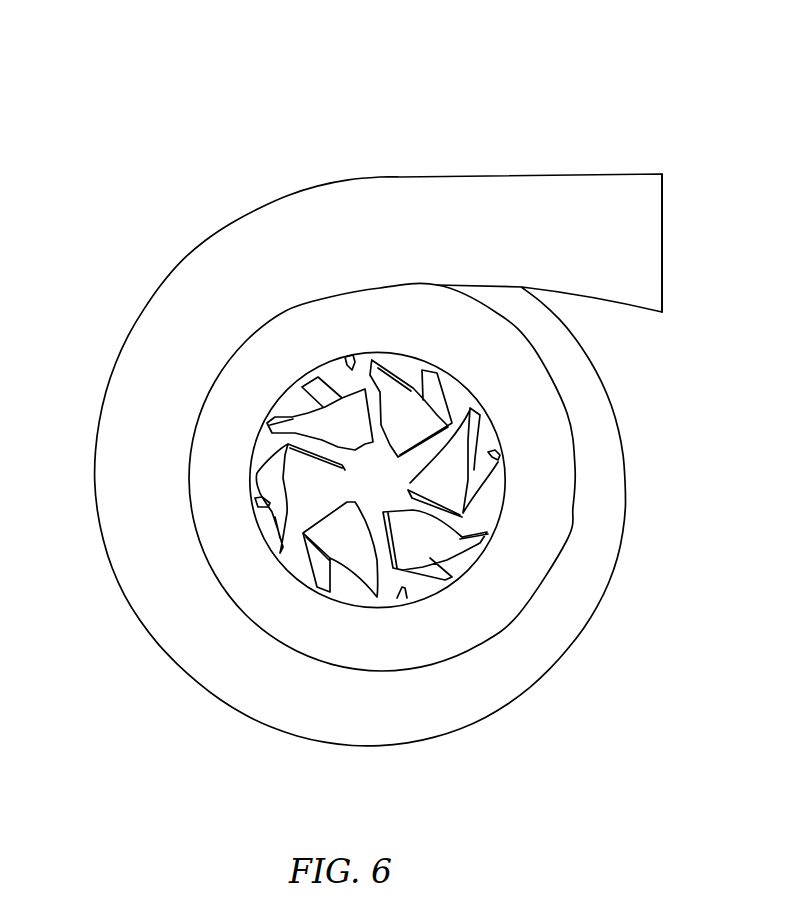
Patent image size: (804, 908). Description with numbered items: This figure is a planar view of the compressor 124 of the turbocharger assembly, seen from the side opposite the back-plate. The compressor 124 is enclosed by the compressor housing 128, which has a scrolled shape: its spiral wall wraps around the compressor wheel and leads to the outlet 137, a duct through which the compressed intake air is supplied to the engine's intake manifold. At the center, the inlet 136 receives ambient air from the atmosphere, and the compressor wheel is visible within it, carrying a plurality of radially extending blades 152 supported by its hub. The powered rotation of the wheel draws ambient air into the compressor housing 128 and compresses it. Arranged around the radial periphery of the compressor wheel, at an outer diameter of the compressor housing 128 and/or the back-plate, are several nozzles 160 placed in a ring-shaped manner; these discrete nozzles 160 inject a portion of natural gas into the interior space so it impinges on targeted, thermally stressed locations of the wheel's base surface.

The compressor 124 is at (630, 78).
The compressor housing 128 is at (283, 703).
The outlet 137 is at (662, 243).
The inlet 136 is at (298, 556).
The blades 152 is at (327, 413).
The nozzles 160 is at (352, 355).